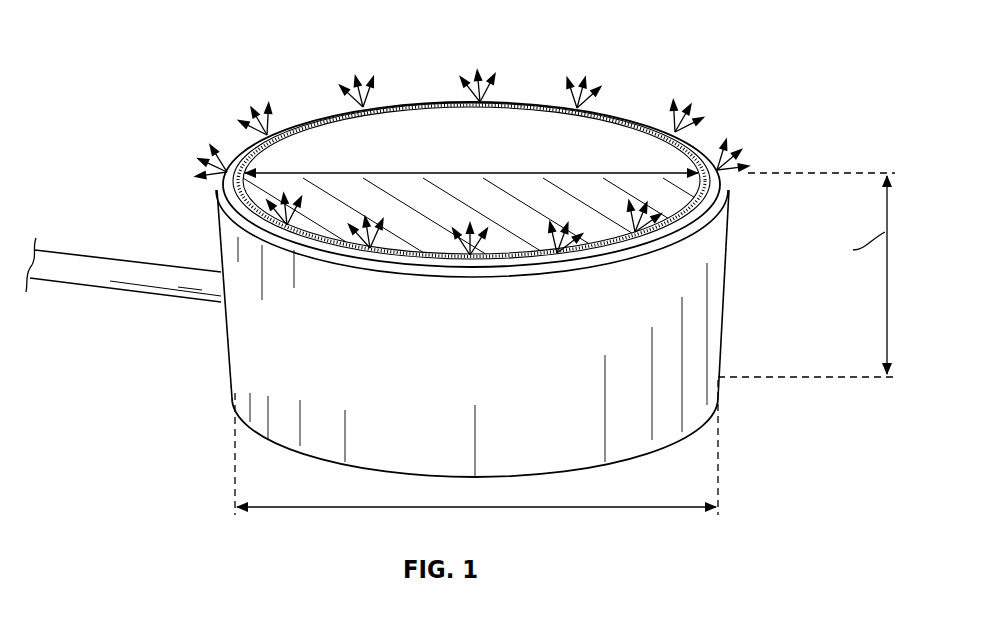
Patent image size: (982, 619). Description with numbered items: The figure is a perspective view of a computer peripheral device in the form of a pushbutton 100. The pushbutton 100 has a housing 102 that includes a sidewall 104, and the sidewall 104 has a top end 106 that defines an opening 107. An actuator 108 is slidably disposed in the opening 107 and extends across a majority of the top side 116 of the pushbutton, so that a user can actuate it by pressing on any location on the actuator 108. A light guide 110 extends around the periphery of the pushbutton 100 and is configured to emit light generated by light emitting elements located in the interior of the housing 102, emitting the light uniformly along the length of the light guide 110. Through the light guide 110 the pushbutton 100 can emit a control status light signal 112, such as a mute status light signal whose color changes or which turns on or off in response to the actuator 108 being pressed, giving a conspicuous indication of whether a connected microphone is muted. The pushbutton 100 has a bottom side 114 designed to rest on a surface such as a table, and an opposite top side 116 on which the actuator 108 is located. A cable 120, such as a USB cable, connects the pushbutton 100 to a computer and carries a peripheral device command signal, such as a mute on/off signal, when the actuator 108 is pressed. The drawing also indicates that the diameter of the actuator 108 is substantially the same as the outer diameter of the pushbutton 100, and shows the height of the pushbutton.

The pushbutton 100 is at (785, 85).
The housing 102 is at (798, 210).
The sidewall 104 is at (722, 343).
The top end 106 is at (750, 172).
The opening 107 is at (722, 68).
The actuator 108 is at (484, 155).
The light guide 110 is at (600, 108).
The control status light signal 112 is at (343, 92).
The bottom side 114 is at (617, 465).
The top side 116 is at (579, 41).
The cable 120 is at (146, 282).